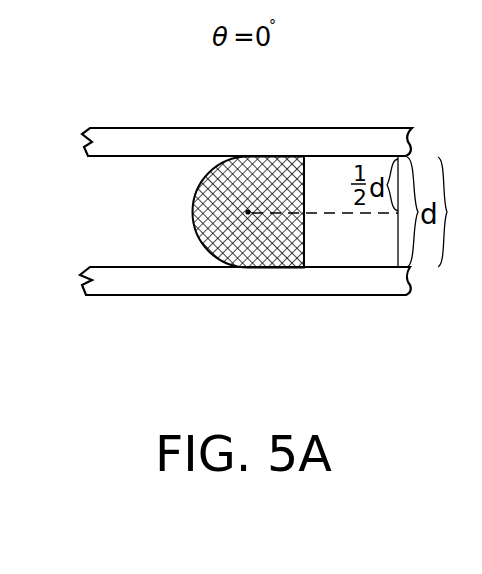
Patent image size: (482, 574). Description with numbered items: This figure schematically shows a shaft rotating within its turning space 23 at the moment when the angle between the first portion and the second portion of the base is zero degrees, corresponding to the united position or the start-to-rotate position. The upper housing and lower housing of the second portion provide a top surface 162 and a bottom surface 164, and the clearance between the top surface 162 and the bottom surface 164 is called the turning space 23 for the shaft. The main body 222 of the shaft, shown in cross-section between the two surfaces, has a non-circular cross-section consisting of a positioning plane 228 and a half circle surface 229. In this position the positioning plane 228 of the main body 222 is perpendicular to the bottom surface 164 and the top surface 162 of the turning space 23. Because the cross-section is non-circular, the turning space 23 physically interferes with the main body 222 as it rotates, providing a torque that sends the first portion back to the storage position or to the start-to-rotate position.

The top surface 162 is at (80, 137).
The bottom surface 164 is at (82, 282).
The half circle surface 229 is at (191, 213).
The main body 222 is at (255, 228).
The positioning plane 228 is at (308, 237).
The turning space 23 is at (458, 212).